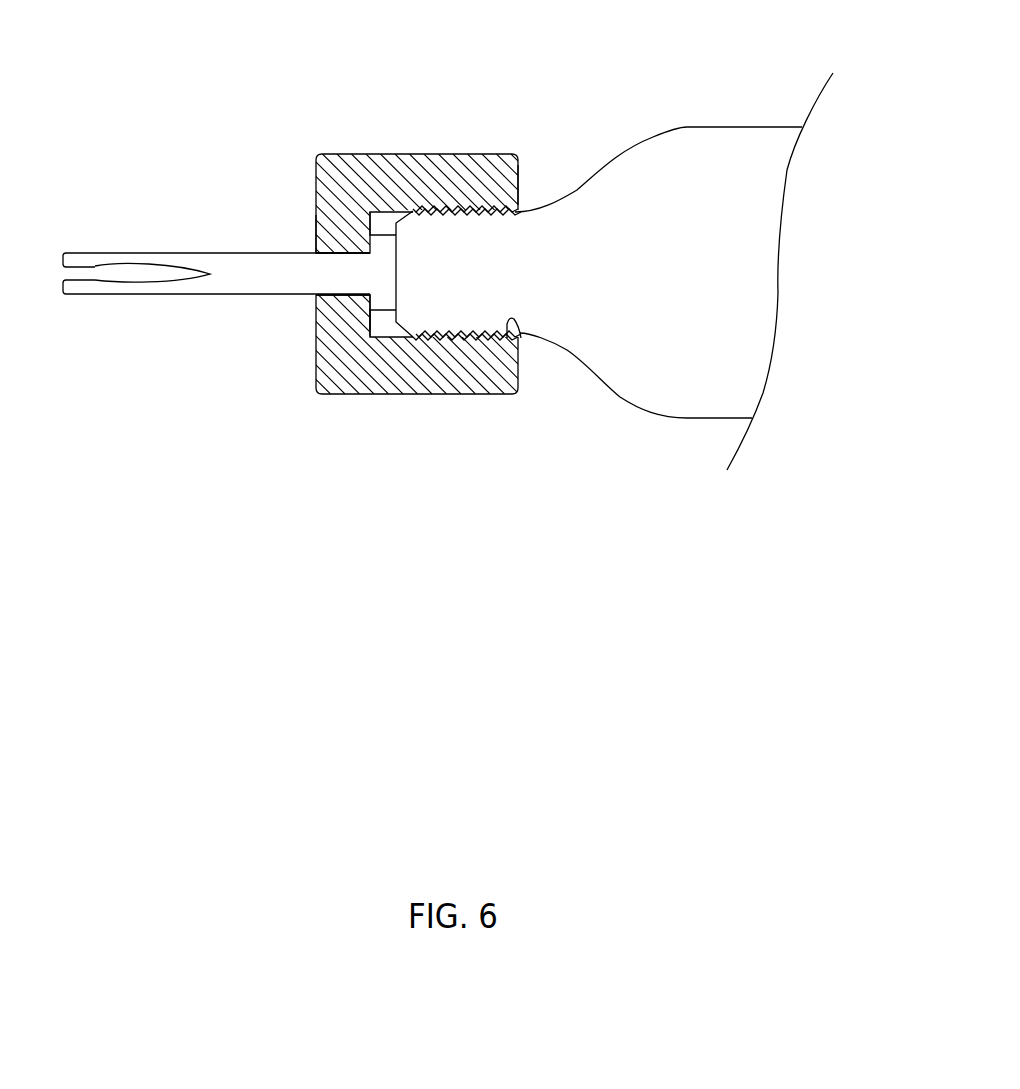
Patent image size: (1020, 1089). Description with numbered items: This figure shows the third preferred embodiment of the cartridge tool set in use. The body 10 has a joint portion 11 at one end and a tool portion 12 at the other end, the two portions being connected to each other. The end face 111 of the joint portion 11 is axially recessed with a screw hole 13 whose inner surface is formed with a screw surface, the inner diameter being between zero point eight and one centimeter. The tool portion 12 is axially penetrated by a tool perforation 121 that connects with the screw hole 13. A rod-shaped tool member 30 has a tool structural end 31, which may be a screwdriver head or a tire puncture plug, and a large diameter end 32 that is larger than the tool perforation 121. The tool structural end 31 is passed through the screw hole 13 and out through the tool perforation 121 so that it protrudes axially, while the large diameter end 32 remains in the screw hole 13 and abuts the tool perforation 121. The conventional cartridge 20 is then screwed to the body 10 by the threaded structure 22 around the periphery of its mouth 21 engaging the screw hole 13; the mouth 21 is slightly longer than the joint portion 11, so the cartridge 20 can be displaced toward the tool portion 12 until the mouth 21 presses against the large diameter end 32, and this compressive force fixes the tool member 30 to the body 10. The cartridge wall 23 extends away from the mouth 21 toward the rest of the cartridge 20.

The body 10 is at (407, 154).
The joint portion 11 is at (413, 241).
The end face 111 is at (518, 182).
The tool portion 12 is at (297, 160).
The tool perforation 121 is at (343, 254).
The screw hole 13 is at (390, 325).
The cartridge 20 is at (670, 264).
The mouth 21 is at (460, 315).
The threaded structure 22 is at (520, 332).
The bottle wall 23 is at (695, 400).
The tool member 30 is at (229, 283).
The tool structural end 31 is at (108, 262).
The large diameter end 32 is at (378, 296).